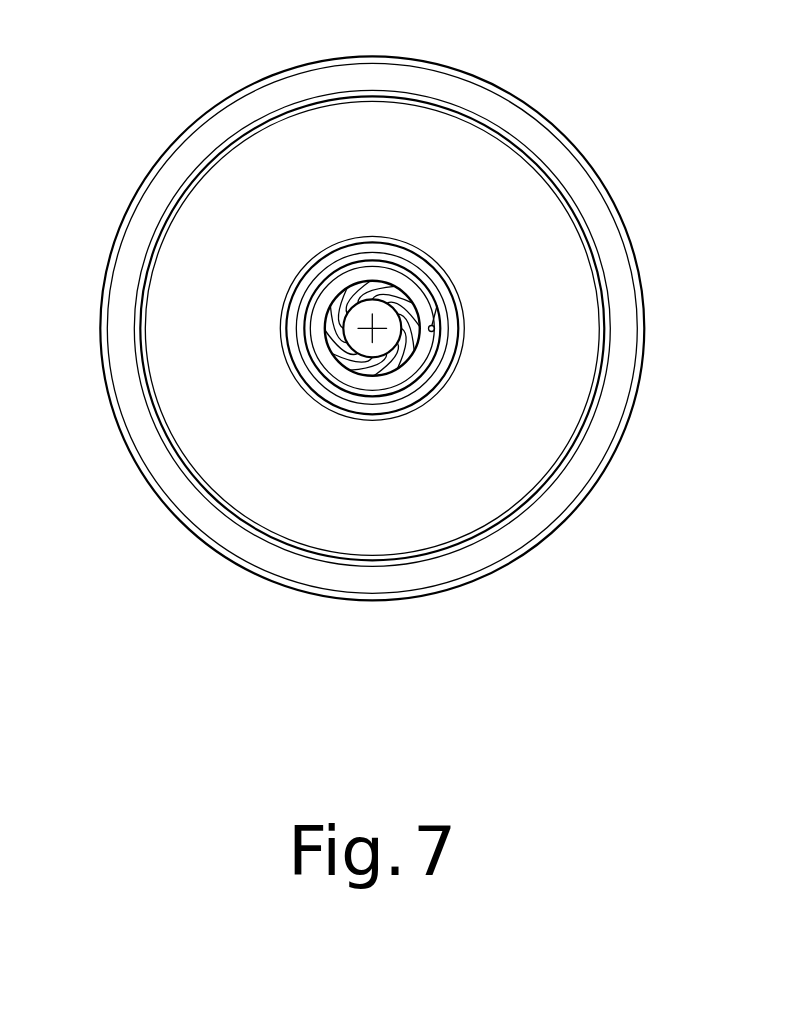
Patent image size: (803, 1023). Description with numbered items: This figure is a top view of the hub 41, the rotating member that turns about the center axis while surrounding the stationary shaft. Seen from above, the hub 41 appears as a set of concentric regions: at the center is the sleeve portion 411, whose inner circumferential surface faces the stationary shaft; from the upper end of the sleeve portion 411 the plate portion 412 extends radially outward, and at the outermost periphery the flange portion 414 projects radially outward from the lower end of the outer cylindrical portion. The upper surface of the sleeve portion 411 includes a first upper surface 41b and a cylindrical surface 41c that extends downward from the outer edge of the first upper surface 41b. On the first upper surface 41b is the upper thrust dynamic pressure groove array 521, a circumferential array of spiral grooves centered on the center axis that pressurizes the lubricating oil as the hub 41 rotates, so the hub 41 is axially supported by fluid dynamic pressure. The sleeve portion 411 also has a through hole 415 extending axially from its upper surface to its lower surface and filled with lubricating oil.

The hub 41 is at (105, 120).
The sleeve portion 411 is at (320, 300).
The plate portion 412 is at (180, 357).
The flange portion 414 is at (153, 453).
The through hole 415 is at (437, 307).
The upper thrust dynamic pressure groove array 521 is at (410, 300).
The first upper surface 41b is at (408, 347).
The cylindrical surface 41c is at (407, 375).